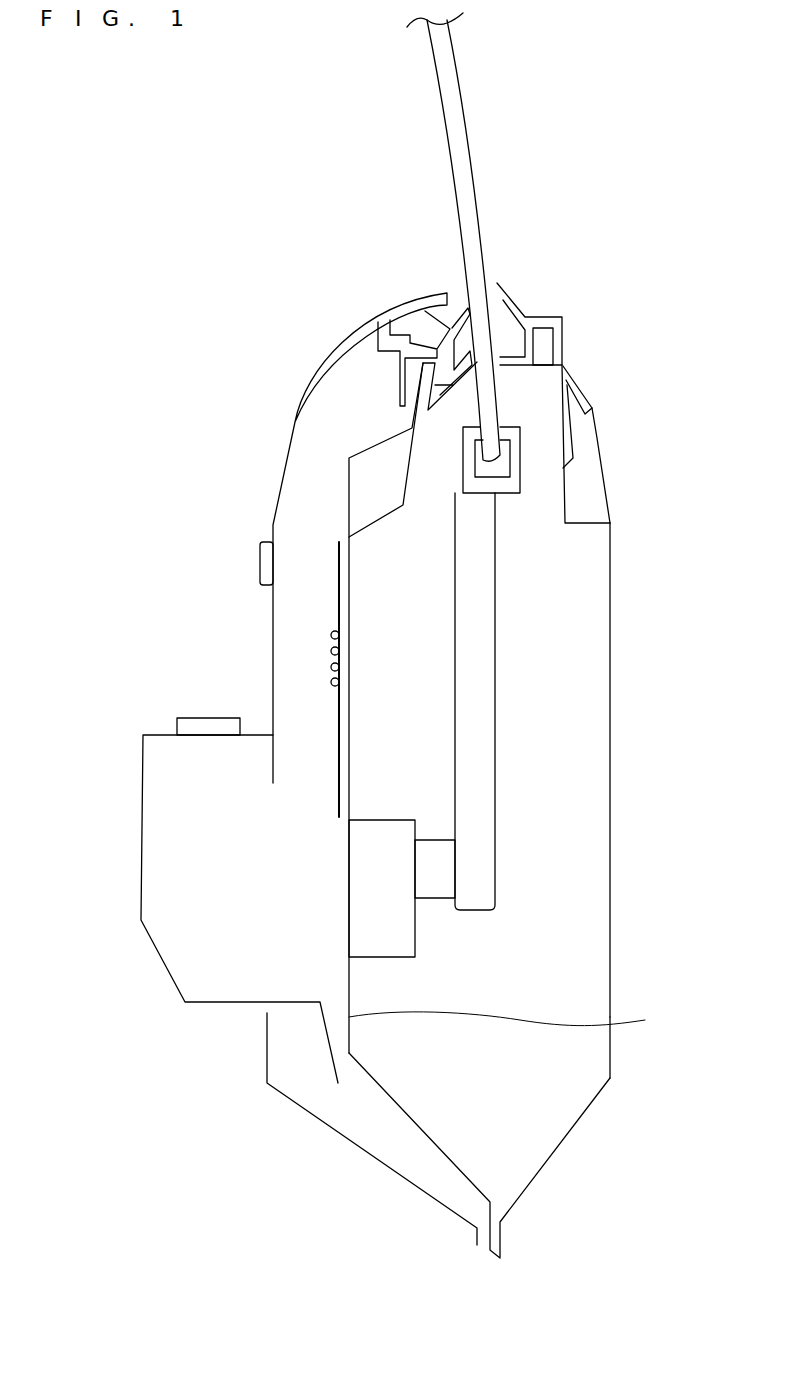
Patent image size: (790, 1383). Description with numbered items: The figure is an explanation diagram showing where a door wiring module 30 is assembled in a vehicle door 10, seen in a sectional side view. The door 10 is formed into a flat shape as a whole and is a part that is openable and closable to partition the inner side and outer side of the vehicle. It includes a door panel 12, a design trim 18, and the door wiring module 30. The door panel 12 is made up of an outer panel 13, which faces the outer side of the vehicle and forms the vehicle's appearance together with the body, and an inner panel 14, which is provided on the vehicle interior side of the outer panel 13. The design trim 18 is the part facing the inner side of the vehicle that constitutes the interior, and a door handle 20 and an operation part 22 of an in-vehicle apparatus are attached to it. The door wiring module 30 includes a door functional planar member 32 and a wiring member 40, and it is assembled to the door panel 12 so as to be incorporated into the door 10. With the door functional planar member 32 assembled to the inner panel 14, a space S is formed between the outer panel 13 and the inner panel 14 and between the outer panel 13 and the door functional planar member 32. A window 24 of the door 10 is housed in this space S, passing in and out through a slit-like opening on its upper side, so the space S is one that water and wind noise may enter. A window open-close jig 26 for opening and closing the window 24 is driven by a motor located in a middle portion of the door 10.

The door 10 is at (292, 142).
The door panel 12 is at (527, 800).
The outer panel 13 is at (611, 967).
The inner panel 14 is at (509, 1043).
The design trim 18 is at (142, 833).
The door handle 20 is at (260, 555).
The operation part 22 is at (212, 718).
The window 24 is at (477, 193).
The window open-close jig 26 is at (487, 705).
The door wiring module 30 is at (276, 679).
The door functional planar member 32 is at (338, 805).
The wiring member 40 is at (332, 695).
The space S is at (538, 1132).